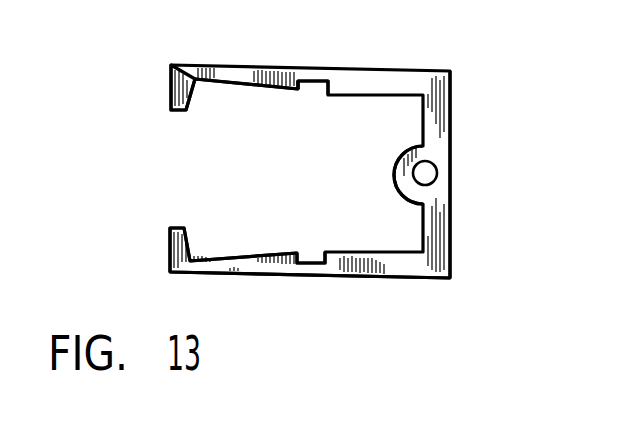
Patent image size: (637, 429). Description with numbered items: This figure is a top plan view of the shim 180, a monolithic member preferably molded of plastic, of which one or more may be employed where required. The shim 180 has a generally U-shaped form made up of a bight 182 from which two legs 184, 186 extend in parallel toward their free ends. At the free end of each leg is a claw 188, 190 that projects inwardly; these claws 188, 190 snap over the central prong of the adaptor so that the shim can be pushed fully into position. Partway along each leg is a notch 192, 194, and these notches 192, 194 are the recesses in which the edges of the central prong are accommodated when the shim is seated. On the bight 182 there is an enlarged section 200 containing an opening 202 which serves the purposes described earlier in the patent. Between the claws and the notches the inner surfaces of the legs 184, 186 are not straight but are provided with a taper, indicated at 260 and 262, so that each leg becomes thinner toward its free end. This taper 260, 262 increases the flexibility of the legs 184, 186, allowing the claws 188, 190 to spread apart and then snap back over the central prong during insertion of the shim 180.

The shim 180 is at (380, 281).
The bight 182 is at (450, 214).
The leg 184 is at (235, 271).
The leg 186 is at (316, 118).
The claw 188 is at (170, 252).
The claw 190 is at (170, 85).
The notch 192 is at (315, 288).
The notch 194 is at (313, 87).
The enlarged section 200 is at (397, 177).
The opening 202 is at (433, 173).
The taper 260 is at (217, 258).
The taper 262 is at (225, 84).